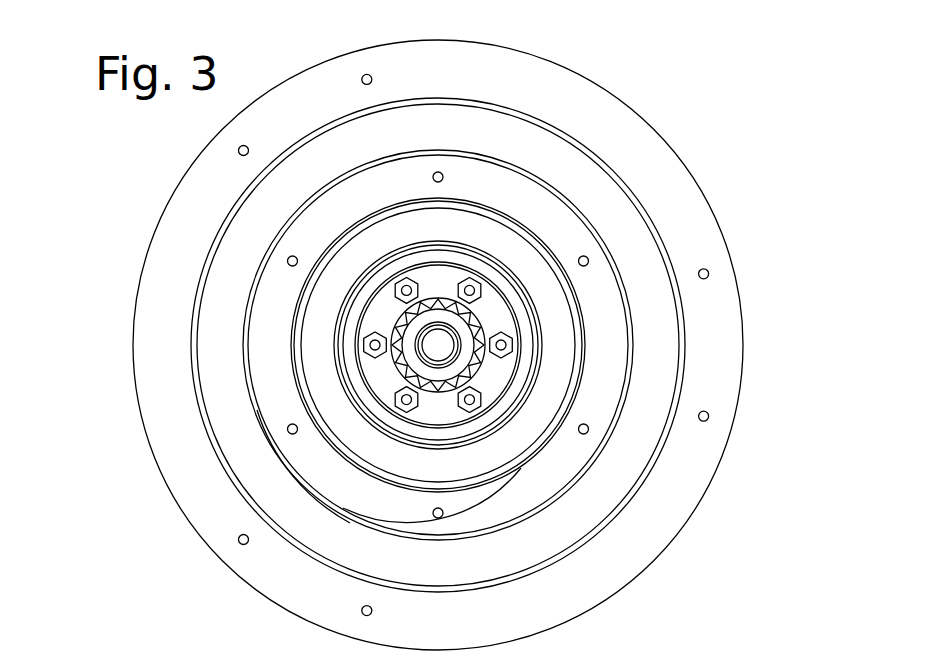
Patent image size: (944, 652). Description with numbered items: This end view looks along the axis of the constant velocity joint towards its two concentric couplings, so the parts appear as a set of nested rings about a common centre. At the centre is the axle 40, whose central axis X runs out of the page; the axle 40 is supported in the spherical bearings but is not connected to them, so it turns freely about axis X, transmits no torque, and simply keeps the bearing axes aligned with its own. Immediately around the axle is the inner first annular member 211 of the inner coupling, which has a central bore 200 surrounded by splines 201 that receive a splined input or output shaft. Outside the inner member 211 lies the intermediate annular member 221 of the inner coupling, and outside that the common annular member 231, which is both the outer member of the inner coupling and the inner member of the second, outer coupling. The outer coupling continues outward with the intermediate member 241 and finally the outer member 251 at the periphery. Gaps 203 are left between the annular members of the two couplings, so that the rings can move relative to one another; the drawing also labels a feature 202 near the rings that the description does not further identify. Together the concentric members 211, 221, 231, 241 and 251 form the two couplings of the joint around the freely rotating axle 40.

The axle 40 is at (435, 342).
The central bore 200 is at (400, 318).
The splines 201 is at (395, 363).
The pads 202 is at (343, 508).
The gaps 203 is at (257, 410).
The inner first annular member 211 is at (500, 372).
The intermediate annular member 221 is at (562, 348).
The common annular member 231 is at (598, 293).
The intermediate member 241 is at (617, 210).
The outer member 251 is at (592, 121).